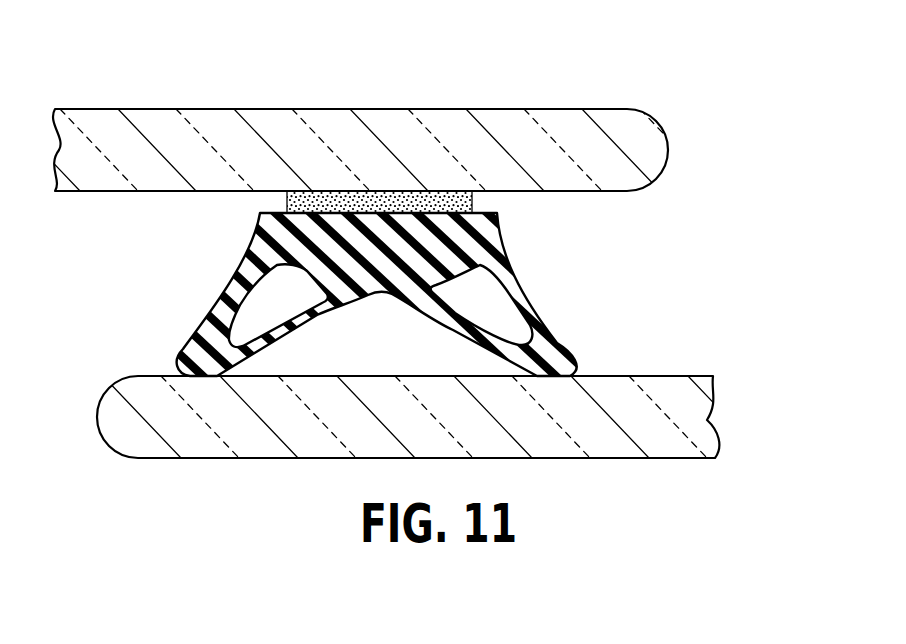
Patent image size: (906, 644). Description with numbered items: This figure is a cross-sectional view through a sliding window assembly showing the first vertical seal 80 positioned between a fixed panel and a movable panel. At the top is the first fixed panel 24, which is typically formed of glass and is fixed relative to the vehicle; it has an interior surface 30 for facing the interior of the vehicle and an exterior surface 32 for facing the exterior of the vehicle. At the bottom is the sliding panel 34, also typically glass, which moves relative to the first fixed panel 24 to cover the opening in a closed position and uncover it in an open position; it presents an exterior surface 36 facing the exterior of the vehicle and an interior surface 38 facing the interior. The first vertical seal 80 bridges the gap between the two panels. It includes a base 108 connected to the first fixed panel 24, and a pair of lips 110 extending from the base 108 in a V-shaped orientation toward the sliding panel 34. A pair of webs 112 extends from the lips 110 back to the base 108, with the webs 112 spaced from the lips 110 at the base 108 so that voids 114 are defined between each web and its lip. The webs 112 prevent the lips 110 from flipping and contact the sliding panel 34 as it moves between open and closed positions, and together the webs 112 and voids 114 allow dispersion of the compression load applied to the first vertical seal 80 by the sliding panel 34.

The first fixed panel 24 is at (578, 120).
The interior surface 30 is at (133, 108).
The exterior surface 32 is at (108, 191).
The sliding panel 34 is at (693, 420).
The exterior surface 36 is at (195, 458).
The interior surface 38 is at (150, 376).
The first vertical seal 80 is at (554, 249).
The base 108 is at (263, 250).
The lips 110 is at (450, 328).
The webs 112 is at (222, 313).
The voids 114 is at (250, 320).